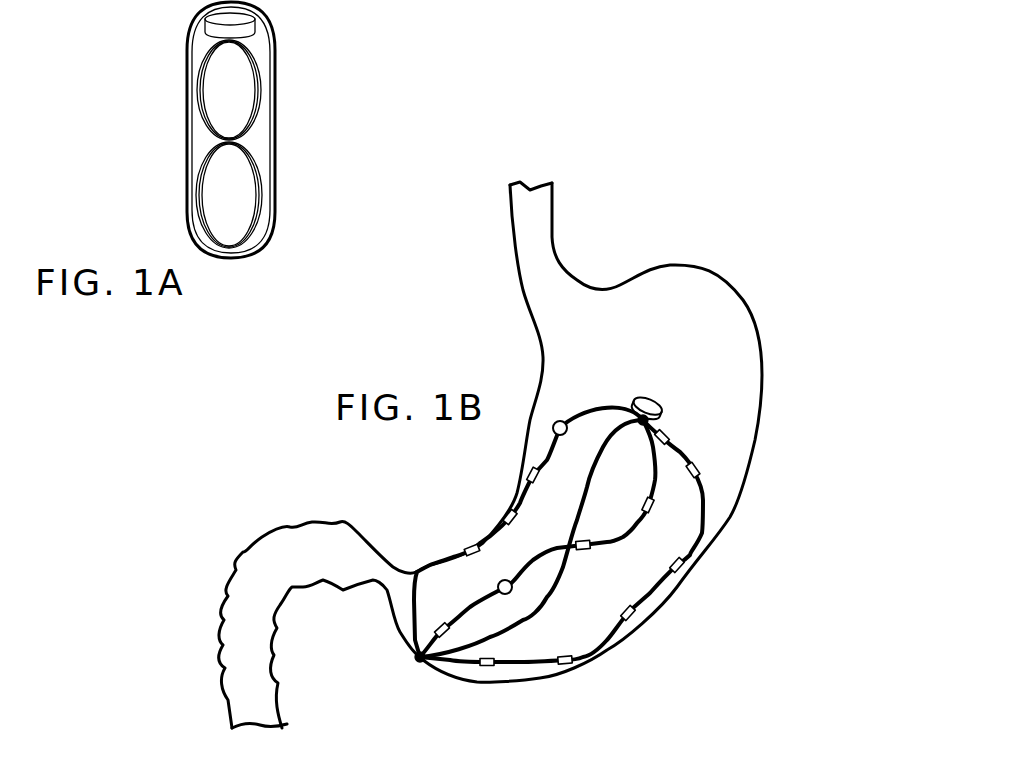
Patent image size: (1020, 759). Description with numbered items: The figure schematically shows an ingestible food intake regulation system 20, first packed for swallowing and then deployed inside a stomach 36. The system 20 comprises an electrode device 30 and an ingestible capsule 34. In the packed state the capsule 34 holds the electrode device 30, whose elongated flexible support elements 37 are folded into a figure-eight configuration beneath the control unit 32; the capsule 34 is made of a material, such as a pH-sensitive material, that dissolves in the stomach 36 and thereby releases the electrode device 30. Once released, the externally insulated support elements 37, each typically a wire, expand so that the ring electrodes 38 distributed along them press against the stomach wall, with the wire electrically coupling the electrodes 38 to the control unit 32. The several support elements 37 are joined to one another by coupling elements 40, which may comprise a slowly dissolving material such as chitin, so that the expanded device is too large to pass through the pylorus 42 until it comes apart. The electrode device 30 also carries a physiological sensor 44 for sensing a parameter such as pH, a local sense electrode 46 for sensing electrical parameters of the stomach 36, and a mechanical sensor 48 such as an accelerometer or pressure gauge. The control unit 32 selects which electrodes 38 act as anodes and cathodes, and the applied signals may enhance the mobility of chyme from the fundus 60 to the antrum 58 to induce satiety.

In FIG. 1A, the ingestible food intake regulation system 20 is at (165, 88).
In FIG. 1A, the electrode device 30 is at (264, 117).
In FIG. 1B, the electrode device 30 is at (577, 370).
In FIG. 1A, the control unit 32 is at (243, 17).
In FIG. 1B, the control unit 32 is at (640, 401).
In FIG. 1A, the ingestible capsule 34 is at (190, 157).
In FIG. 1B, the stomach 36 is at (740, 535).
In FIG. 1A, the elongated flexible support element 37 is at (262, 208).
In FIG. 1B, the elongated flexible support element 37 is at (752, 518).
In FIG. 1B, the electrode 38 is at (472, 550).
In FIG. 1B, the coupling element 40 is at (668, 438).
In FIG. 1B, the pylorus 42 is at (393, 567).
In FIG. 1B, the physiological sensor 44 is at (500, 587).
In FIG. 1B, the local sense electrode 46 is at (585, 550).
In FIG. 1B, the mechanical sensor 48 is at (560, 423).
In FIG. 1B, the antrum 58 is at (473, 682).
In FIG. 1B, the fundus 60 is at (727, 283).